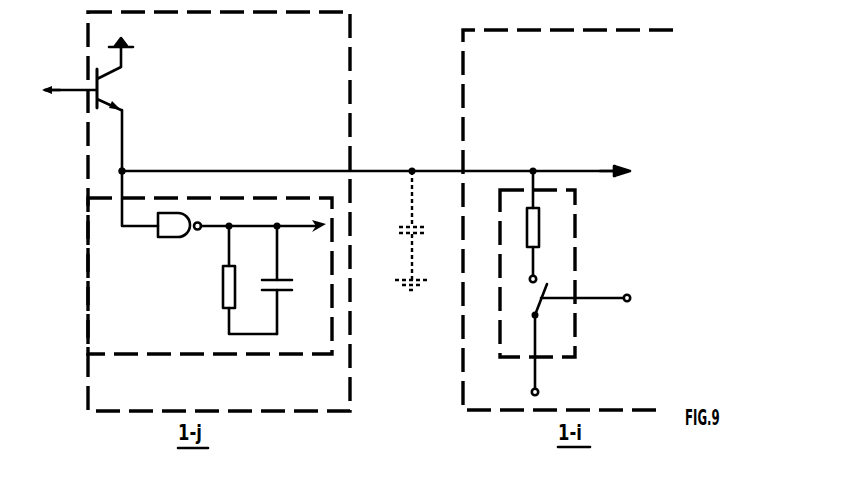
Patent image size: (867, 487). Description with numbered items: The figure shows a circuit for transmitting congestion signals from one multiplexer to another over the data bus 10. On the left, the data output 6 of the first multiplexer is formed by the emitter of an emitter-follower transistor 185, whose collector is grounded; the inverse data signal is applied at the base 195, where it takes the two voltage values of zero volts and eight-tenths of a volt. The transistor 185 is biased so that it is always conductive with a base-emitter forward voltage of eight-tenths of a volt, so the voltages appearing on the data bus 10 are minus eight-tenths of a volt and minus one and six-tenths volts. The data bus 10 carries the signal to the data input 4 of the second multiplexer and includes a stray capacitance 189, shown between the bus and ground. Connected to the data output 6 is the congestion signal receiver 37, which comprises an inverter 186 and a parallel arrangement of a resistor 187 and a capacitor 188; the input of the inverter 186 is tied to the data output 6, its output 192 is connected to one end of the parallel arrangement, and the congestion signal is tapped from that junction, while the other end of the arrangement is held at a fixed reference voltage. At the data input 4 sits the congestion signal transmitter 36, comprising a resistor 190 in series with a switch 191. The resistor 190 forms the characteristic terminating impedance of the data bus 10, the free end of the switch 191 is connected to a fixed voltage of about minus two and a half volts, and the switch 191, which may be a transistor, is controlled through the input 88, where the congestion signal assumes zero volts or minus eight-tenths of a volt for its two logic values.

The emitter-follower transistor 185 is at (94, 77).
The base 195 is at (46, 94).
The data output 6 is at (126, 169).
The data bus 10 is at (443, 165).
The data input 4 is at (627, 168).
The congestion signal receiver 37 is at (88, 318).
The inverter 186 is at (176, 237).
The inverter output 192 is at (321, 231).
The resistor 187 is at (222, 296).
The capacitor 188 is at (284, 292).
The stray capacitance 189 is at (403, 233).
The congestion signal transmitter 36 is at (577, 355).
The resistor 190 is at (540, 226).
The input 88 is at (575, 298).
The switch 191 is at (545, 305).